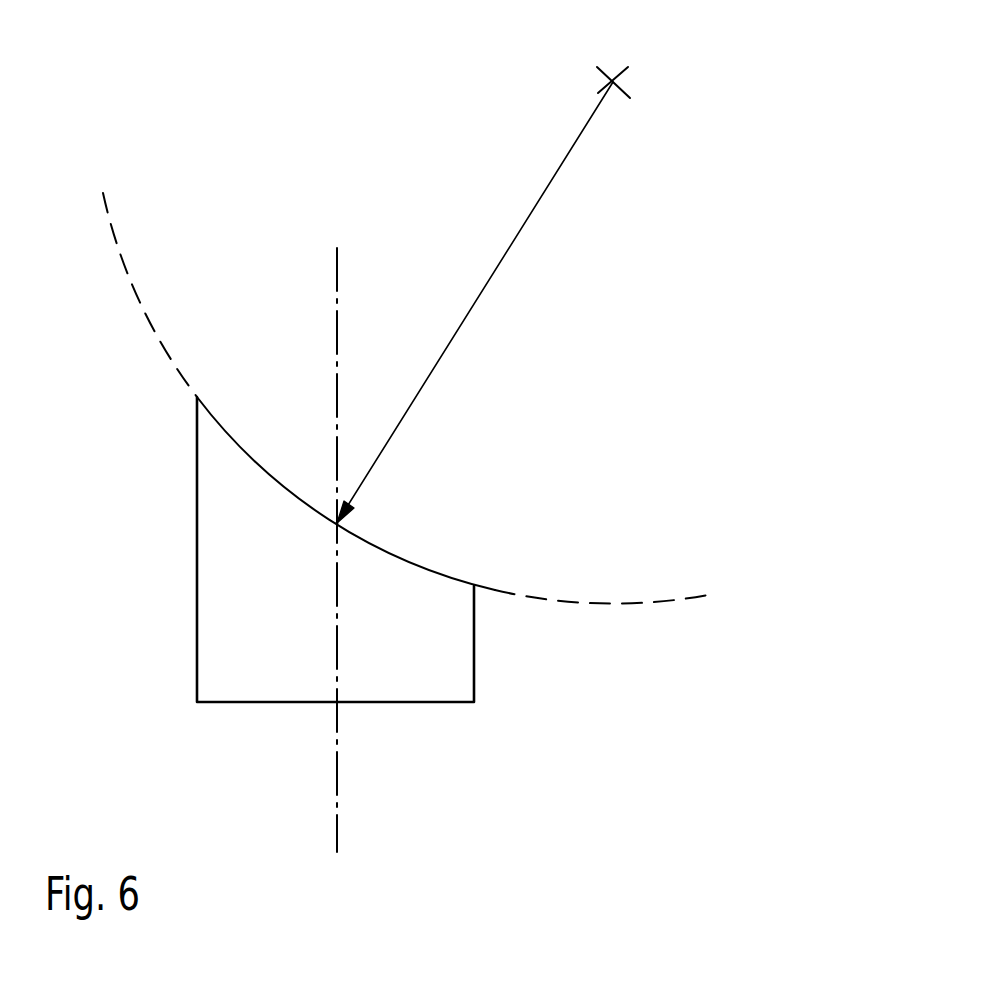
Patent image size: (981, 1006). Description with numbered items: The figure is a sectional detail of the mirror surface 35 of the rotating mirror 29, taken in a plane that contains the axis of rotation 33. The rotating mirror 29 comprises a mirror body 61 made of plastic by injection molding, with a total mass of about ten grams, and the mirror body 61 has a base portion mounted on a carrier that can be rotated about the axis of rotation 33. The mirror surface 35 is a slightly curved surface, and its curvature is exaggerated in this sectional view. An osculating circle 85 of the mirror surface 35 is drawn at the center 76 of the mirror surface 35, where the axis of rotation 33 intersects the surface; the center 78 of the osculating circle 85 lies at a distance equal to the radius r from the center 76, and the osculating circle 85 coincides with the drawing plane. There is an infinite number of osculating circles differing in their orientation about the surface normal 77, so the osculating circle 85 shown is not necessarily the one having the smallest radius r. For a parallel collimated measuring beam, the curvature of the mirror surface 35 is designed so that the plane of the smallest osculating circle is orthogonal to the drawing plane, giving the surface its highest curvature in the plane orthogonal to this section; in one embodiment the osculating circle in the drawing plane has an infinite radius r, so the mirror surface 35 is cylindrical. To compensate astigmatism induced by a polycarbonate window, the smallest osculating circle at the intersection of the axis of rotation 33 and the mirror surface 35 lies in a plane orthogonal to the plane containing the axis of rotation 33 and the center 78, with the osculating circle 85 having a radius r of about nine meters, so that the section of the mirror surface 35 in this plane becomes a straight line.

The rotating mirror 29 is at (103, 517).
The axis of rotation 33 is at (338, 272).
The mirror surface 35 is at (453, 578).
The mirror body 61 is at (197, 604).
The center of the mirror surface 76 is at (343, 524).
The surface normal 77 is at (445, 352).
The center of the osculating circle 78 is at (613, 72).
The osculating circle 85 is at (113, 238).
The radius of the osculating circle r is at (537, 207).